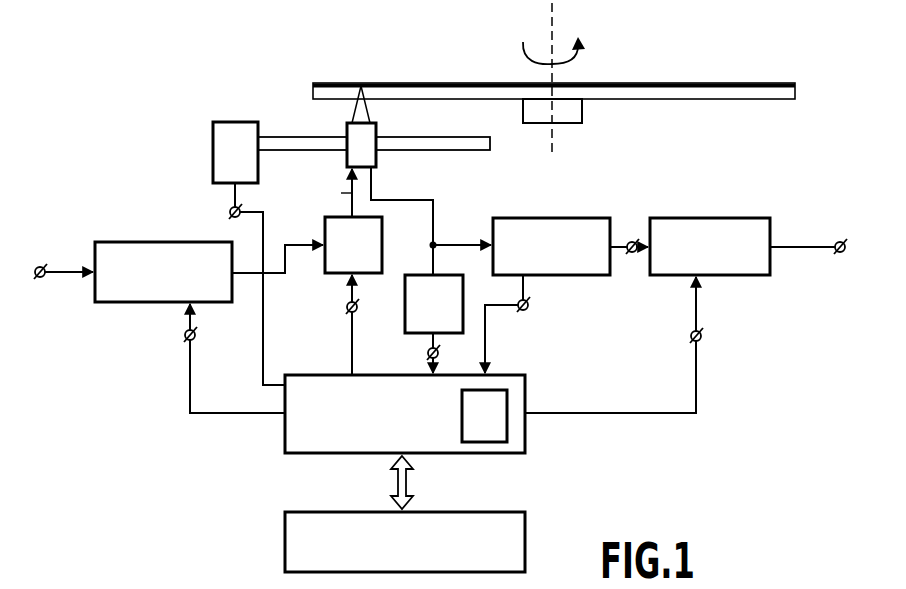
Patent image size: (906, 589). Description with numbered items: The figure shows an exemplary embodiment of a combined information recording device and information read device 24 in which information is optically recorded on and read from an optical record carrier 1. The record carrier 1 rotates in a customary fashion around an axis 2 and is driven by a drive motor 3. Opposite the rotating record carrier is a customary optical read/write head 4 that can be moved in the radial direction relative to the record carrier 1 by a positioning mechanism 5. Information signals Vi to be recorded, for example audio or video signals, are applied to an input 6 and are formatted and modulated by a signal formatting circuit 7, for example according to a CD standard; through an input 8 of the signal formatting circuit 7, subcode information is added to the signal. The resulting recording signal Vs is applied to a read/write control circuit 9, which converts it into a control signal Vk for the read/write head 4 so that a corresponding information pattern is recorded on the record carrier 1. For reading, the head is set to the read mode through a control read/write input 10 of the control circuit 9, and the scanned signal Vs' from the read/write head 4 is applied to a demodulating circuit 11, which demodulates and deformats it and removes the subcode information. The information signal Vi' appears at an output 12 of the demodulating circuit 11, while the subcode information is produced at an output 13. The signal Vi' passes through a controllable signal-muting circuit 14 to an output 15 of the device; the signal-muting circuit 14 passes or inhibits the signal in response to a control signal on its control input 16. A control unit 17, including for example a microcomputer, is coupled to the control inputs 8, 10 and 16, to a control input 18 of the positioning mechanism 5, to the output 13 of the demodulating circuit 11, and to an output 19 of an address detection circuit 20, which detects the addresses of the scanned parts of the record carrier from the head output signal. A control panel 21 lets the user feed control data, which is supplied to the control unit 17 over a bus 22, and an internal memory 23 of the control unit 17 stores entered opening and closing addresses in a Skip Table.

The optical record carrier 1 is at (760, 83).
The axis 2 is at (583, 51).
The drive motor 3 is at (582, 118).
The optical read/write head 4 is at (378, 160).
The positioning mechanism 5 is at (232, 122).
The input 6 is at (40, 266).
The signal formatting circuit 7 is at (137, 242).
The input of the signal formatting circuit 8 is at (184, 335).
The read/write control circuit 9 is at (383, 234).
The control read/write input 10 is at (346, 307).
The demodulating circuit 11 is at (560, 243).
The output of the demodulating circuit 12 is at (631, 203).
The output of the demodulating circuit 13 is at (529, 310).
The controllable signal-muting circuit 14 is at (706, 237).
The output 15 is at (838, 242).
The control input 16 is at (701, 334).
The control unit 17 is at (525, 438).
The control input of the positioning mechanism 18 is at (230, 212).
The output of the address detection circuit 19 is at (439, 353).
The address detection circuit 20 is at (405, 306).
The control panel 21 is at (521, 550).
The bus 22 is at (410, 484).
The internal memory 23 is at (507, 406).
The combined information recording device and information read device 24 is at (688, 30).